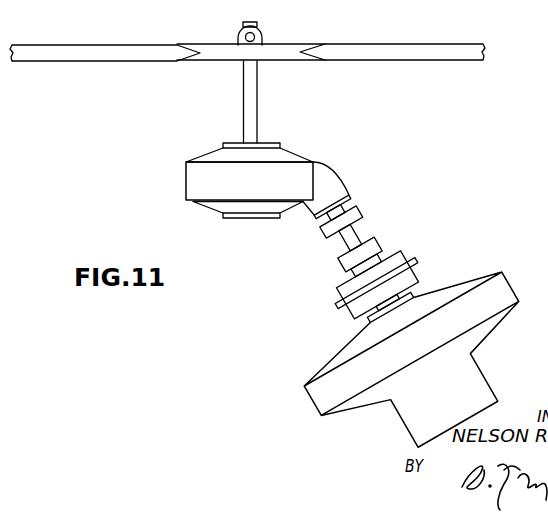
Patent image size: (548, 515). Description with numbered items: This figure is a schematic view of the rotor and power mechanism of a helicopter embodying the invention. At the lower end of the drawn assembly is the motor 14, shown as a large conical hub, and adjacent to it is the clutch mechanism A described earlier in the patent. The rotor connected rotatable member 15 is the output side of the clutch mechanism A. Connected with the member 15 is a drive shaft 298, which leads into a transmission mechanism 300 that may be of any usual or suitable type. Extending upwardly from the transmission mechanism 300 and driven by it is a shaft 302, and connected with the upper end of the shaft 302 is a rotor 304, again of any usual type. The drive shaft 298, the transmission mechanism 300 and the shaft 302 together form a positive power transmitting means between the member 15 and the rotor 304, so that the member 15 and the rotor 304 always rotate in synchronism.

The rotor 304 is at (446, 46).
The shaft 302 is at (258, 99).
The transmission mechanism 300 is at (300, 173).
The drive shaft 298 is at (351, 237).
The rotor connected rotatable member 15 is at (372, 249).
The clutch mechanism A is at (405, 256).
The motor 14 is at (350, 352).